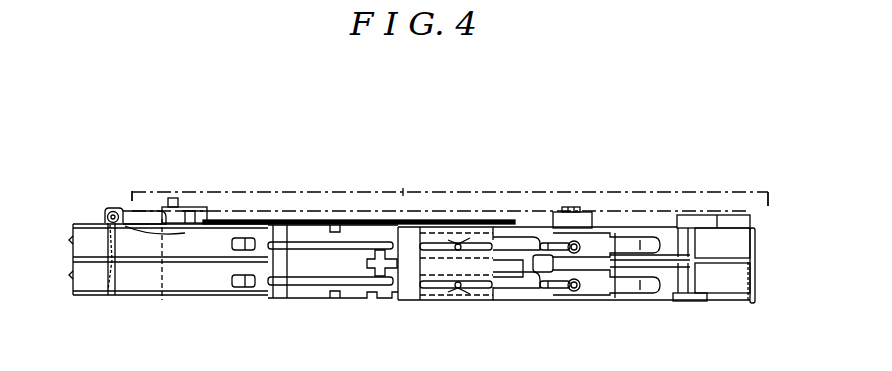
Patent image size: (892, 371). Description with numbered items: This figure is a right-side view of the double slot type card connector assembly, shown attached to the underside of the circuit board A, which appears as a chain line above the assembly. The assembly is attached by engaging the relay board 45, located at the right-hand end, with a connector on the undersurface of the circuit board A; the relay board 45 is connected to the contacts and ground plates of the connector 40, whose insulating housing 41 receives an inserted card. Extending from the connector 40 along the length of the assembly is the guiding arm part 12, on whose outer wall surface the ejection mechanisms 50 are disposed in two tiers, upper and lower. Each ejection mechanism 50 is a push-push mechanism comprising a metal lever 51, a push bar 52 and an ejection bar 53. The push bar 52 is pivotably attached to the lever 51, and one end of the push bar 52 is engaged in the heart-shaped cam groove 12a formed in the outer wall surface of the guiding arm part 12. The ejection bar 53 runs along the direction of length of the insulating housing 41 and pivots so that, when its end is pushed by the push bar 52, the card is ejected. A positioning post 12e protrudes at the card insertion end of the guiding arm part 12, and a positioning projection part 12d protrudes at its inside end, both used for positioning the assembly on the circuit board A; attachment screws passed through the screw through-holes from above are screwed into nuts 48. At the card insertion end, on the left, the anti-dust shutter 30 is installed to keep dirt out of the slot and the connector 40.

The circuit board A is at (399, 192).
The ejection mechanism 50 is at (85, 222).
The anti-dust shutter 30 is at (107, 296).
The positioning post 12e is at (175, 198).
The lever 51 is at (335, 232).
The heart-shaped cam groove 12a is at (445, 226).
The nut 48 is at (590, 262).
The positioning projection part 12d is at (563, 207).
The guiding arm part 12 is at (633, 235).
The push bar 52 is at (652, 238).
The ejection bar 53 is at (695, 240).
The connector 40 is at (754, 215).
The insulating housing 41 is at (725, 243).
The relay board 45 is at (757, 248).